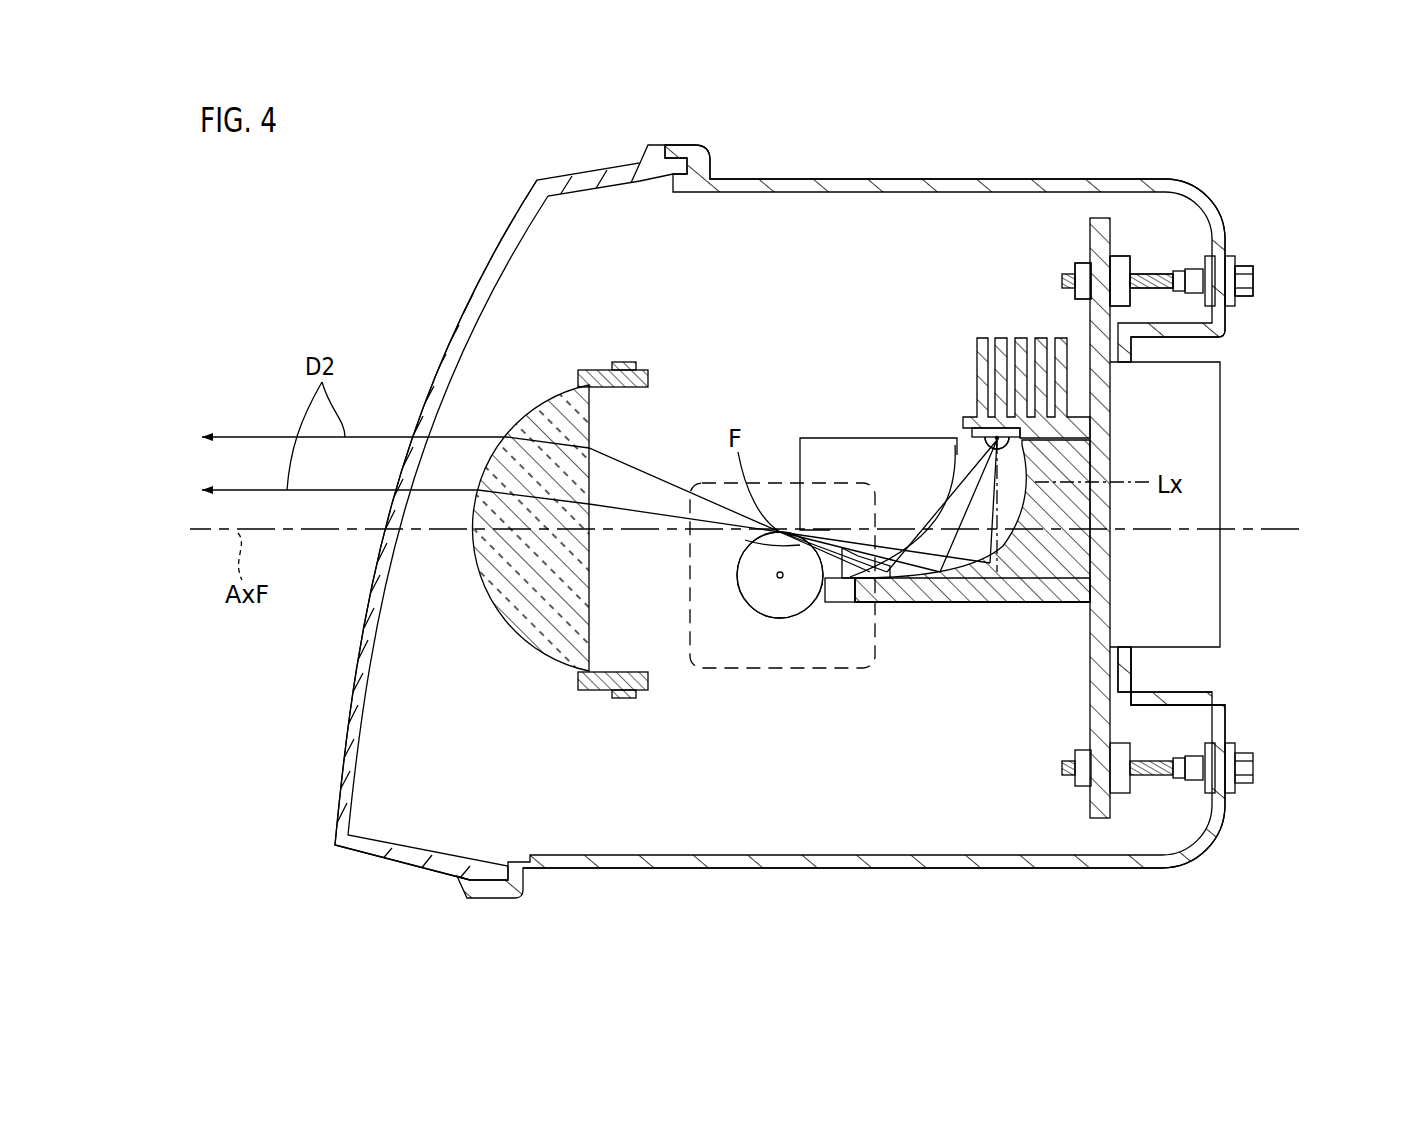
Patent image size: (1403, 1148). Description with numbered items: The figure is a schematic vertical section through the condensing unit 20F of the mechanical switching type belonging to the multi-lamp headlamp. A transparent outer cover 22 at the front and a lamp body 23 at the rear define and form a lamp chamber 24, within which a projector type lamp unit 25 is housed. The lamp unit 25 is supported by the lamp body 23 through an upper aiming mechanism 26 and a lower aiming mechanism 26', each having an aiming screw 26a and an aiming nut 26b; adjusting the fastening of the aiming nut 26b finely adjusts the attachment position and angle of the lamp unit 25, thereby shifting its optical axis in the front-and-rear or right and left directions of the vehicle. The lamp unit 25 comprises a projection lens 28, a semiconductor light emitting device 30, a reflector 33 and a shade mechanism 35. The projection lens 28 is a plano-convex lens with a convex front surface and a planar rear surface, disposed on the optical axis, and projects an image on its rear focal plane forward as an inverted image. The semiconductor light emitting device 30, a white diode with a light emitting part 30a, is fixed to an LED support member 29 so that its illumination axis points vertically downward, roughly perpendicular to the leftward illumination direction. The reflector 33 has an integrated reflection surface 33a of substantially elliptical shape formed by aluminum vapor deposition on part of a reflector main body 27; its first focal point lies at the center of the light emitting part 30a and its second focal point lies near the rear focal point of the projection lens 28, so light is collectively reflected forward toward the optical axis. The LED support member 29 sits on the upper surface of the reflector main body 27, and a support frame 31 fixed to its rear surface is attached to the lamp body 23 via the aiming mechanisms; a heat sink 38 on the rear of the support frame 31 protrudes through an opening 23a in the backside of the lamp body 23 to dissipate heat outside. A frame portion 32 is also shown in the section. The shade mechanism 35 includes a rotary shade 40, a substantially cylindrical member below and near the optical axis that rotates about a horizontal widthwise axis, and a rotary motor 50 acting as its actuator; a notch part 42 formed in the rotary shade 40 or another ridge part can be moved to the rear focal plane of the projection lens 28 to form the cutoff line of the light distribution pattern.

The condensing unit 20F is at (1322, 230).
The transparent outer cover 22 is at (468, 302).
The lamp body 23 is at (942, 178).
The opening 23a is at (1133, 654).
The lamp chamber 24 is at (492, 771).
The lamp unit 25 is at (778, 365).
The aiming mechanism 26 is at (1158, 199).
The aiming screw 26a is at (1155, 274).
The aiming nut 26b is at (1118, 257).
The aiming mechanism 26' is at (1157, 798).
The reflector main body 27 is at (1040, 610).
The projection lens 28 is at (532, 408).
The LED support member 29 is at (970, 353).
The semiconductor light emitting device 30 is at (978, 450).
The light emitting part 30a is at (1002, 441).
The support frame 31 is at (1088, 716).
The holder frame 32 is at (818, 432).
The reflector 33 is at (928, 600).
The reflection surface 33a is at (1015, 520).
The shade mechanism 35 is at (782, 637).
The heat sink 38 is at (1222, 450).
The rotary shade 40 is at (752, 613).
The notch part 42 is at (790, 545).
The rotary motor 50 is at (822, 673).